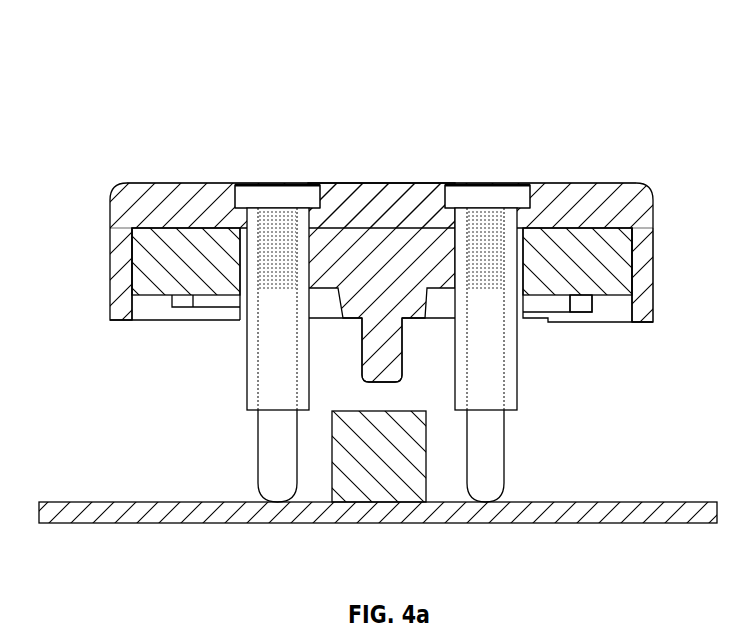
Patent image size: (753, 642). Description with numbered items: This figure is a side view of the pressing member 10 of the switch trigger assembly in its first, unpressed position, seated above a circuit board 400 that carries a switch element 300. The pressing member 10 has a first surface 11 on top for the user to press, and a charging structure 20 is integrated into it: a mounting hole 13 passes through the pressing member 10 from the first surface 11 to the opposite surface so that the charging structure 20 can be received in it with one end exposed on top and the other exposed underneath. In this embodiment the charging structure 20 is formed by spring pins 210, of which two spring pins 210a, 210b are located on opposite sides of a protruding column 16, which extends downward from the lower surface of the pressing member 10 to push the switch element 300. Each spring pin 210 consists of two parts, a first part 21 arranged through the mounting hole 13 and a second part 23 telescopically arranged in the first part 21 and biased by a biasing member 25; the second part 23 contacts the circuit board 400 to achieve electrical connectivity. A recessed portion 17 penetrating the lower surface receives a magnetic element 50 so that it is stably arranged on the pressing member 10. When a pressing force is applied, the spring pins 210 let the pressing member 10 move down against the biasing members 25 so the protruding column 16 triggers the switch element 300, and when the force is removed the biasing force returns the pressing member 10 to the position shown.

The pressing member 10 is at (124, 191).
The first surface 11 is at (607, 183).
The mounting hole 13 is at (238, 201).
The protruding column 16 is at (362, 328).
The recessed portion 17 is at (644, 246).
The charging structure 20 is at (381, 256).
The first part 21 is at (247, 386).
The second part 23 is at (258, 462).
The biasing member 25 is at (302, 232).
The spring pin 210 is at (381, 117).
The spring pin 210a is at (283, 183).
The spring pin 210b is at (508, 183).
The magnetic element 50 is at (612, 295).
The switch element 300 is at (332, 462).
The circuit board 400 is at (628, 523).